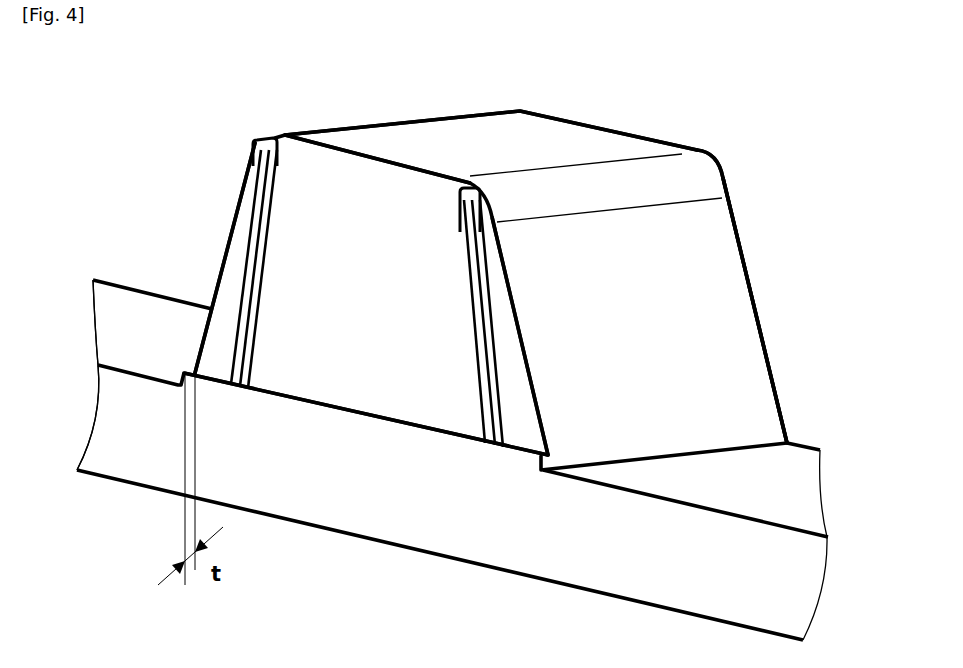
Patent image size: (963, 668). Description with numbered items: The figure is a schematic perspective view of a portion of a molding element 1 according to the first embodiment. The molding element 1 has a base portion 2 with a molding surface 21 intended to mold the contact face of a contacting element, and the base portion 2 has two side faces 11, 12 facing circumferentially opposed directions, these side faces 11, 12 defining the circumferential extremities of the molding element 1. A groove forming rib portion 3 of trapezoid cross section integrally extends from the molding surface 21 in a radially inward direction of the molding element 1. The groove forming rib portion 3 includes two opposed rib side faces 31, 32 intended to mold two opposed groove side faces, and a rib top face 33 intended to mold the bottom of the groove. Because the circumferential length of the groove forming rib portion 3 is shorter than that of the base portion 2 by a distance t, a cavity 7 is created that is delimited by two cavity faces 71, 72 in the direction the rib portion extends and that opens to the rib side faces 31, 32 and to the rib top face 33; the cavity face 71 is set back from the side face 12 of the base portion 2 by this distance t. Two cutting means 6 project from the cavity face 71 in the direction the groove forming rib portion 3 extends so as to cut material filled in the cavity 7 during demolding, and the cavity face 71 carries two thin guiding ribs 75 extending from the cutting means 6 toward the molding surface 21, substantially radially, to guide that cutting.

The molding element 1 is at (702, 117).
The base portion 2 is at (115, 265).
The groove forming rib portion 3 is at (660, 175).
The cutting means 6 is at (254, 145).
The cavity 7 is at (313, 215).
The side face 11 is at (807, 443).
The side face 12 is at (642, 557).
The molding surface 21 is at (117, 324).
The rib side face 31 is at (240, 225).
The rib side face 32 is at (715, 278).
The rib top face 33 is at (545, 130).
The cavity face 71 is at (370, 325).
The cavity face 72 is at (763, 330).
The guiding rib 75 is at (240, 303).